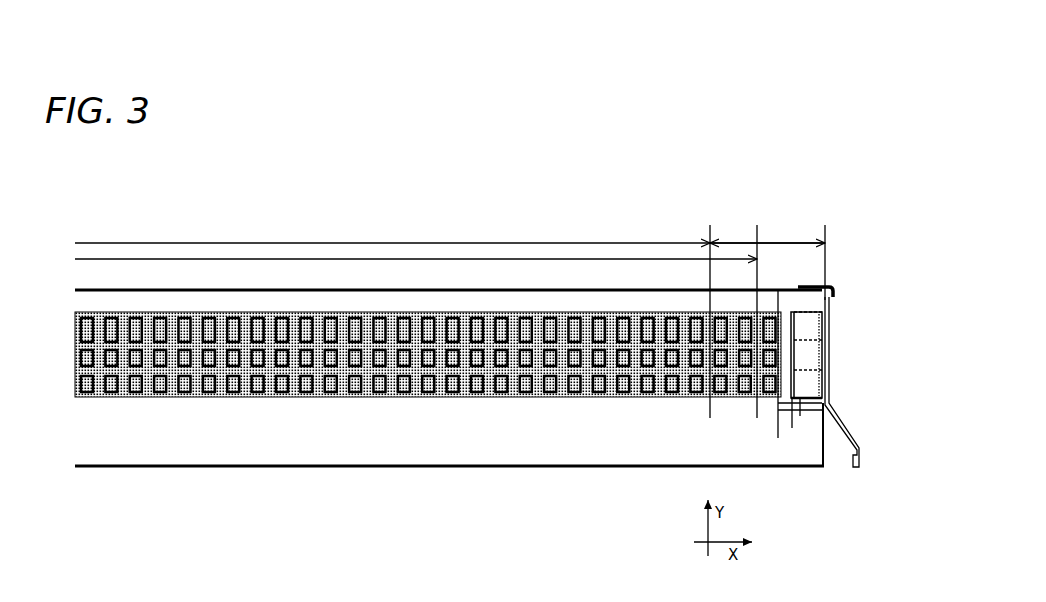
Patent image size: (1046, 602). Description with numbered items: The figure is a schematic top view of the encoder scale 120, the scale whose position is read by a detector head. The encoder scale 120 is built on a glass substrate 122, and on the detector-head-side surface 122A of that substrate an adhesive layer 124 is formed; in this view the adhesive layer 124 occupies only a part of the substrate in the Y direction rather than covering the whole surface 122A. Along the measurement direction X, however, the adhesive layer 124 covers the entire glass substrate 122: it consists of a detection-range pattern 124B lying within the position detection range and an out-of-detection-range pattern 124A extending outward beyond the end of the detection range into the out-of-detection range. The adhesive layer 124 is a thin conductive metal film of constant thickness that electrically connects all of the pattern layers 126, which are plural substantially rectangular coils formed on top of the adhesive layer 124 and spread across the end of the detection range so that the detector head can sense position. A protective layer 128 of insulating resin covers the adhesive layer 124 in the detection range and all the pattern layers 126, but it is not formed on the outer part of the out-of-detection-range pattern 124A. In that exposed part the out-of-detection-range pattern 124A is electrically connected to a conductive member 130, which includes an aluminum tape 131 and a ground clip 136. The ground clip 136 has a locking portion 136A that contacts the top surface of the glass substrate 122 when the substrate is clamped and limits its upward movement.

The encoder scale 120 is at (566, 218).
The glass substrate 122 is at (440, 455).
The detector-head-side surface 122A is at (587, 423).
The adhesive layer 124 is at (288, 387).
The out-of-detection-range pattern 124A is at (740, 395).
The detection-range pattern 124B is at (368, 390).
The pattern layers 126 is at (225, 388).
The protective layer 128 is at (172, 389).
The conductive member 130 is at (829, 264).
The aluminum tape 131 is at (797, 301).
The ground clip 136 is at (829, 332).
The locking portion 136A is at (813, 283).